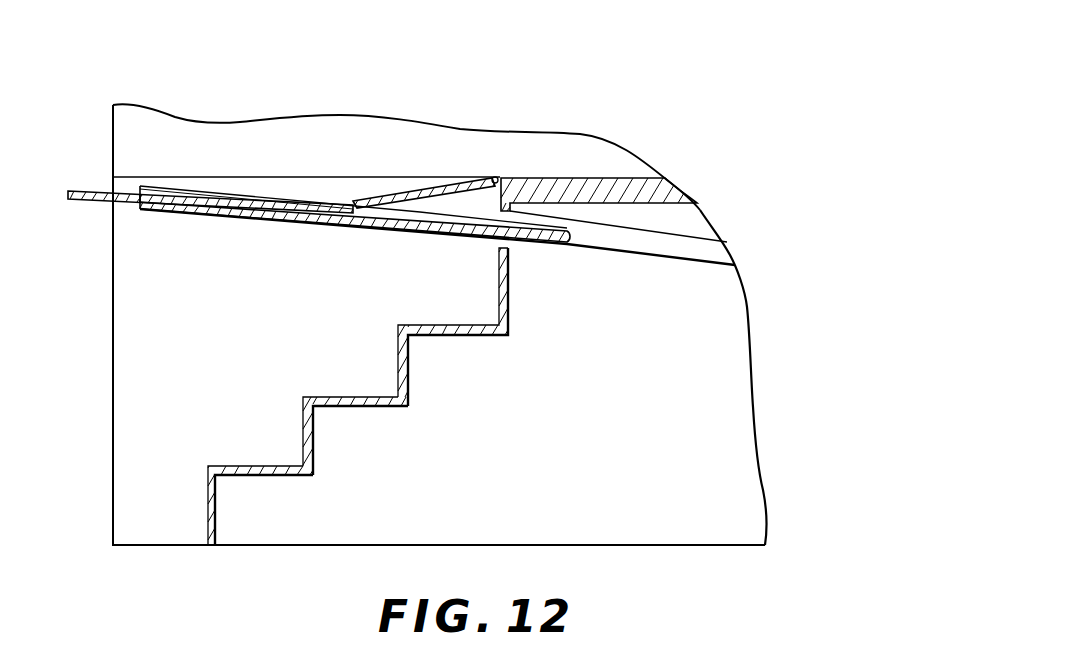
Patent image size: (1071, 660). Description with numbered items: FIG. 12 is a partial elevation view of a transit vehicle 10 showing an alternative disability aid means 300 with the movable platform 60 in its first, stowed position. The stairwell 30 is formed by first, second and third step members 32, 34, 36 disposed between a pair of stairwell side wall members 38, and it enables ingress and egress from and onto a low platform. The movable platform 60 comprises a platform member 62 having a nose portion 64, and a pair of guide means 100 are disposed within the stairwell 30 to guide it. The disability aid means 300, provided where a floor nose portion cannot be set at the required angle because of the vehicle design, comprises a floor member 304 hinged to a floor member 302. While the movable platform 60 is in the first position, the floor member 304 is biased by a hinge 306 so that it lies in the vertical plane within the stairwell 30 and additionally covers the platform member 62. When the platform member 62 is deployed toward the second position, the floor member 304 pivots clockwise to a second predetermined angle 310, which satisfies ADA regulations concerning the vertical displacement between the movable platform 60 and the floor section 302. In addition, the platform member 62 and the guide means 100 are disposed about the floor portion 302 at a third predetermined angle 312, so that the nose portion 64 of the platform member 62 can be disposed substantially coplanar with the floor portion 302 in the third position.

The transit vehicle 10 is at (688, 157).
The stairwell 30 is at (201, 374).
The first step member 32 is at (245, 467).
The second step member 34 is at (345, 397).
The third step member 36 is at (447, 323).
The stairwell side wall member 38 is at (222, 348).
The movable platform 60 is at (203, 163).
The platform member 62 is at (153, 198).
The nose portion 64 is at (68, 192).
The guide means 100 is at (365, 225).
The disability aid means 300 is at (450, 152).
The floor member 302 is at (568, 178).
The floor member 304 is at (402, 190).
The hinge 306 is at (495, 176).
The second predetermined angle 310 is at (242, 228).
The third predetermined angle 312 is at (707, 203).